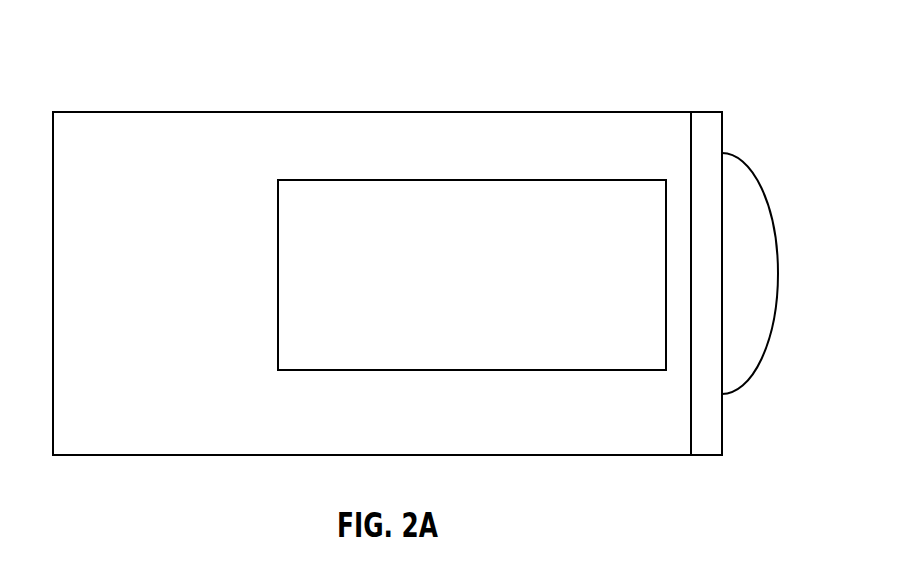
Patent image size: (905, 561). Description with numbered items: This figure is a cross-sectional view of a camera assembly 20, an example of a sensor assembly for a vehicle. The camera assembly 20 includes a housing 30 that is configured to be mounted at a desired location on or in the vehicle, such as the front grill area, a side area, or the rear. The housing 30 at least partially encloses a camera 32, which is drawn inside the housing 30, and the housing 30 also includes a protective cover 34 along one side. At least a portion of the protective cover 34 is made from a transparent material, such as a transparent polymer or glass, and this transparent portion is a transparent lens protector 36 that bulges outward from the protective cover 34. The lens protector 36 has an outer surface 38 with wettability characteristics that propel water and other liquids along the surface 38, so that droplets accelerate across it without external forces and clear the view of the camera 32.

The camera assembly 20 is at (98, 31).
The housing 30 is at (108, 112).
The camera 32 is at (290, 269).
The protective cover 34 is at (704, 128).
The lens protector 36 is at (757, 327).
The surface 38 is at (778, 258).